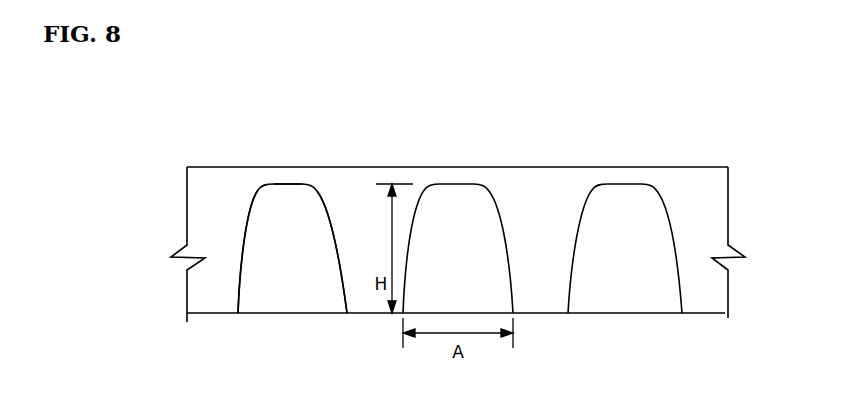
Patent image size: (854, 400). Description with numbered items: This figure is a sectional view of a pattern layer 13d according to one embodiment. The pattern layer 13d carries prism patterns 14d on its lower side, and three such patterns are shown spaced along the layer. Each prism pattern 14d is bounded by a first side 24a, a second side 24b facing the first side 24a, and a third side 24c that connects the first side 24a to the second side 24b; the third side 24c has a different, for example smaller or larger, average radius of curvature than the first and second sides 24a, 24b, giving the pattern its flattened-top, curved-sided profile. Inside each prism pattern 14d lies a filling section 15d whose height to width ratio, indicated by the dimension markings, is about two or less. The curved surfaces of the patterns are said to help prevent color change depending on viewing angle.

The pattern layer 13d is at (700, 193).
The prism pattern 14d is at (290, 186).
The filling section 15d is at (623, 280).
The first side 24a is at (252, 207).
The second side 24b is at (338, 222).
The third side 24c is at (298, 187).